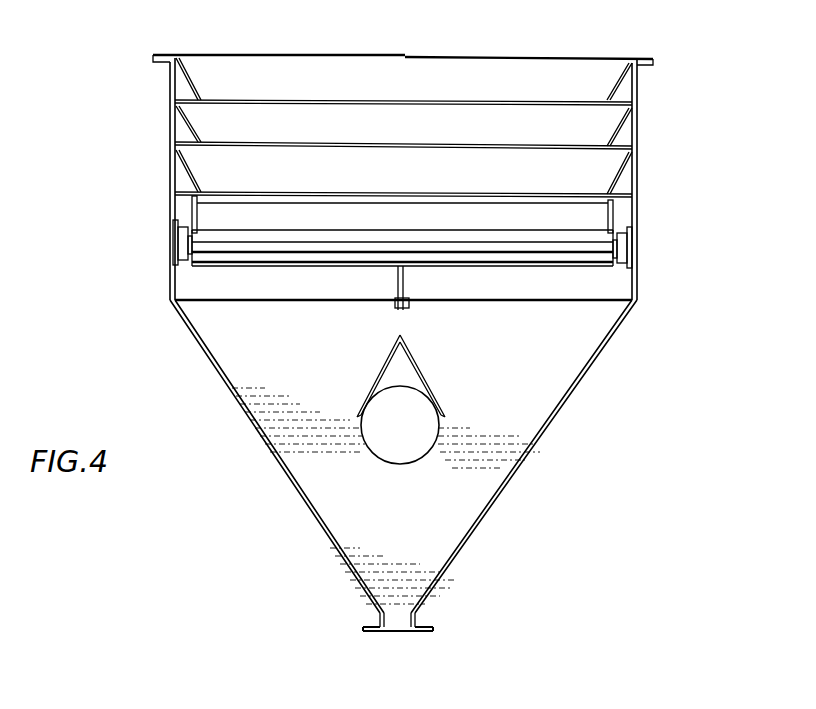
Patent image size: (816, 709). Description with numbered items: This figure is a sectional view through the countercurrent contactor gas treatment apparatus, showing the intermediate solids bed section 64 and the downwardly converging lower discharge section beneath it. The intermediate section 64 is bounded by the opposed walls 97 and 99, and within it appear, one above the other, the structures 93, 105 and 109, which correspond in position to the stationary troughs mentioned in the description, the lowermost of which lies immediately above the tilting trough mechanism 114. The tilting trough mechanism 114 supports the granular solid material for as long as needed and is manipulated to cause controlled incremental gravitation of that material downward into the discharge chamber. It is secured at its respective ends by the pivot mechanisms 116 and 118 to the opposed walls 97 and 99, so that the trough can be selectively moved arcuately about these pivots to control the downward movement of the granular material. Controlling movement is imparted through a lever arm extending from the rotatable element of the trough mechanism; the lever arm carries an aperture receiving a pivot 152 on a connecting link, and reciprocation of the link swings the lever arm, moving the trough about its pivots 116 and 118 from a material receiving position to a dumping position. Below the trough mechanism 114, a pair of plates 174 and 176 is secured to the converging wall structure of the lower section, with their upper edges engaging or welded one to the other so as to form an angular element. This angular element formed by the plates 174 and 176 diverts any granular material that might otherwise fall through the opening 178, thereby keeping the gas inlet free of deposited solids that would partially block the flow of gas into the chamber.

The intermediate solids bed section 64 is at (638, 133).
The upper baffle plate 93 is at (195, 68).
The opposed wall 97 is at (637, 88).
The opposed wall 99 is at (170, 82).
The intermediate baffle plate 105 is at (172, 128).
The lower baffle plate 109 is at (172, 171).
The tilting trough mechanism 114 is at (616, 215).
The pivot mechanism 116 is at (178, 243).
The pivot mechanism 118 is at (622, 250).
The pivot 152 is at (395, 305).
The plate 174 is at (377, 380).
The plate 176 is at (425, 373).
The opening 178 is at (380, 457).